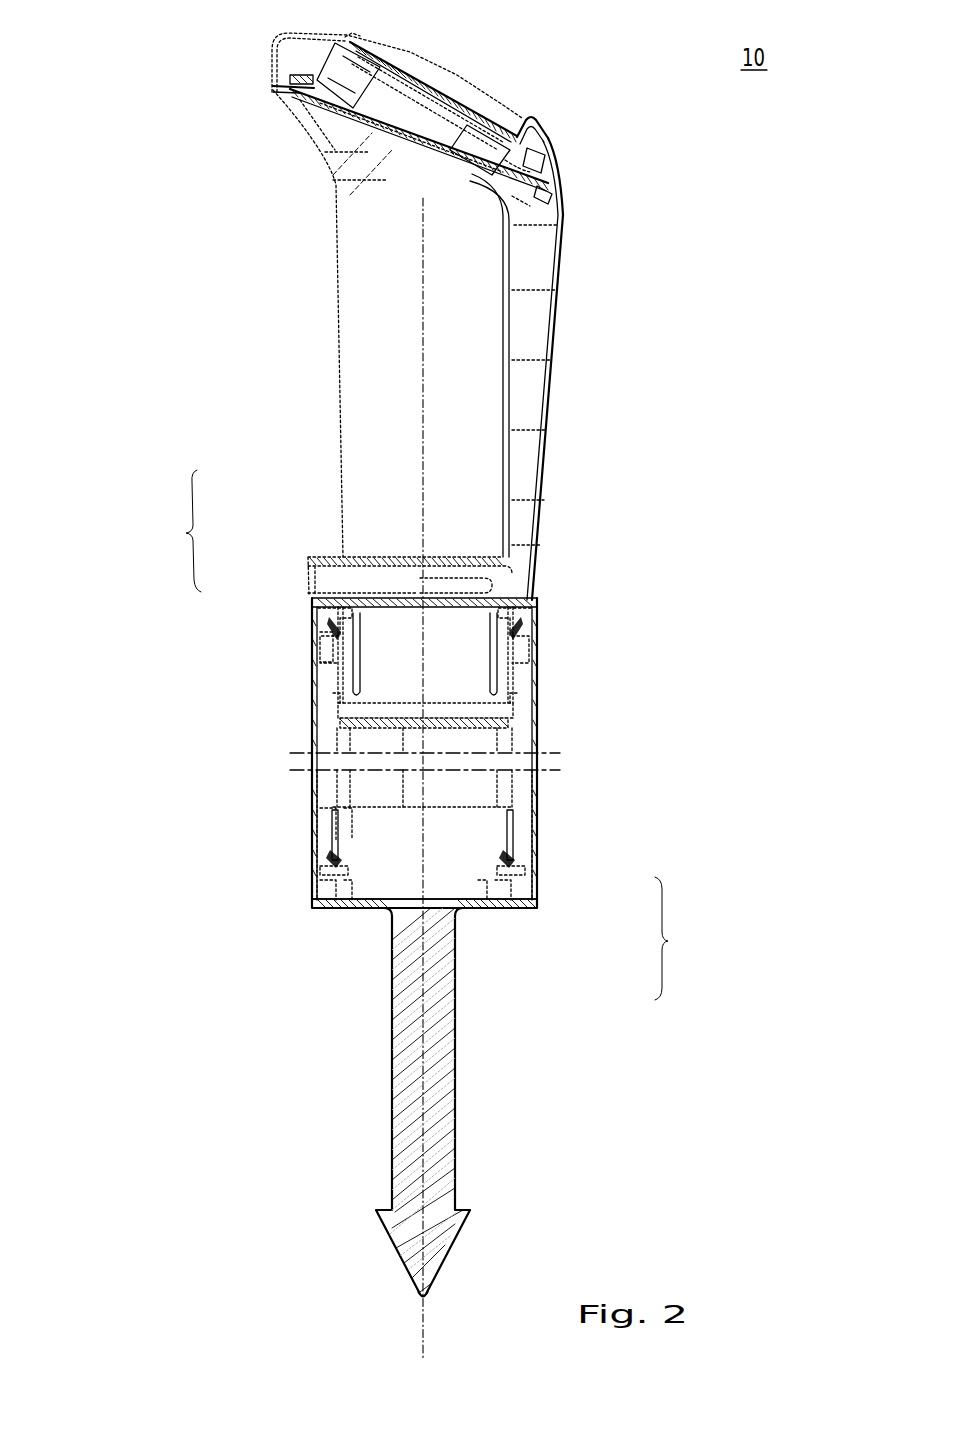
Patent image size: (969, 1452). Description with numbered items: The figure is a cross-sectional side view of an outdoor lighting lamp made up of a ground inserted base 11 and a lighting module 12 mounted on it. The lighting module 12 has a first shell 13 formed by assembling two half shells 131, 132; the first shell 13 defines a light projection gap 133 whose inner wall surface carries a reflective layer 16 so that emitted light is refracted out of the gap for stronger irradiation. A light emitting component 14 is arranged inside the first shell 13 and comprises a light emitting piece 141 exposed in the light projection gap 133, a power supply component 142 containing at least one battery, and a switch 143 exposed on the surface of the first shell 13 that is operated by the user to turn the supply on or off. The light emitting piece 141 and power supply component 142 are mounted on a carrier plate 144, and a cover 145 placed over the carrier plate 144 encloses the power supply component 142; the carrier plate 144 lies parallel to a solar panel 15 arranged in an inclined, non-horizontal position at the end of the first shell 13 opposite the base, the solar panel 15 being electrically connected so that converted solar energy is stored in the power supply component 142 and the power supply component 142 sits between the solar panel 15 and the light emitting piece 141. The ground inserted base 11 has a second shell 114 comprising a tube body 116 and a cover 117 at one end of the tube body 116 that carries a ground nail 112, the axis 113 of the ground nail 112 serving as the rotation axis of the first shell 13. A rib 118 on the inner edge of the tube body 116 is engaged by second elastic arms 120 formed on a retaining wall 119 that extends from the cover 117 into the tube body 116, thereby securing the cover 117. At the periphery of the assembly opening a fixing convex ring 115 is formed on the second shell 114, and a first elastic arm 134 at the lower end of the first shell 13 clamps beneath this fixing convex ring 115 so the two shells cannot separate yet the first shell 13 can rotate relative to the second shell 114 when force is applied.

The ground inserted base 11 is at (674, 938).
The lighting module 12 is at (188, 192).
The first shell 13 is at (181, 531).
The light emitting component 14 is at (318, 55).
The solar panel 15 is at (403, 58).
The reflective layer 16 is at (518, 412).
The ground nail 112 is at (472, 1018).
The axis 113 is at (421, 1330).
The second shell 114 is at (557, 834).
The fixing convex ring 115 is at (330, 620).
The tube body 116 is at (538, 692).
The cover 117 is at (345, 907).
The rib 118 is at (318, 877).
The retaining wall 119 is at (525, 808).
The second elastic arm 120 is at (335, 852).
The half shell 131 is at (465, 625).
The half shell 132 is at (397, 613).
The light projection gap 133 is at (345, 302).
The first elastic arm 134 is at (540, 630).
The light emitting piece 141 is at (332, 176).
The power supply component 142 is at (432, 145).
The switch 143 is at (556, 165).
The carrier plate 144 is at (562, 206).
The cover 145 is at (545, 137).